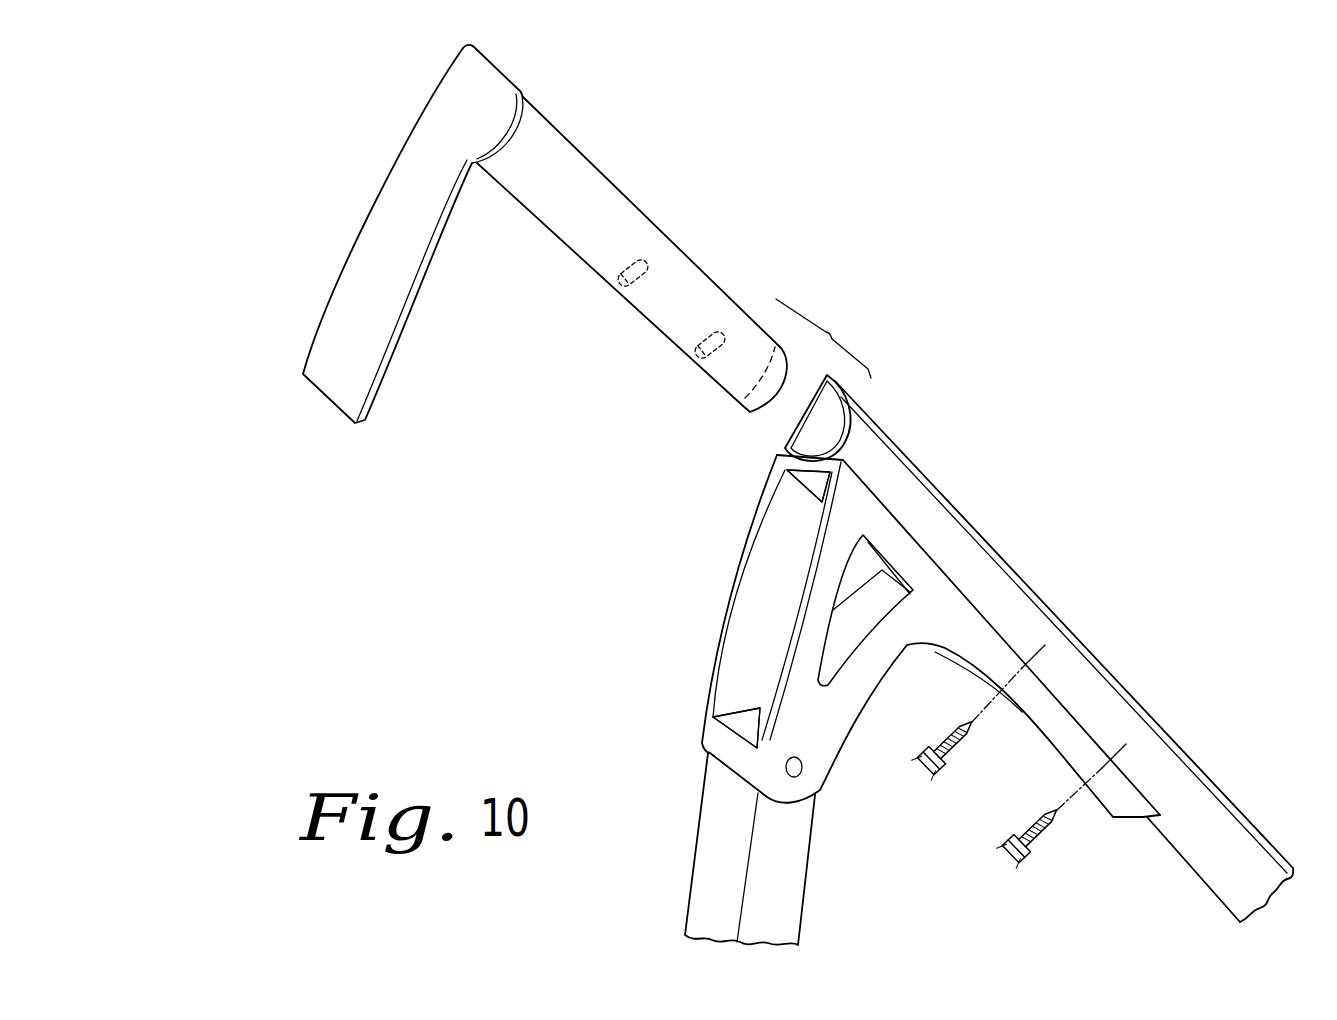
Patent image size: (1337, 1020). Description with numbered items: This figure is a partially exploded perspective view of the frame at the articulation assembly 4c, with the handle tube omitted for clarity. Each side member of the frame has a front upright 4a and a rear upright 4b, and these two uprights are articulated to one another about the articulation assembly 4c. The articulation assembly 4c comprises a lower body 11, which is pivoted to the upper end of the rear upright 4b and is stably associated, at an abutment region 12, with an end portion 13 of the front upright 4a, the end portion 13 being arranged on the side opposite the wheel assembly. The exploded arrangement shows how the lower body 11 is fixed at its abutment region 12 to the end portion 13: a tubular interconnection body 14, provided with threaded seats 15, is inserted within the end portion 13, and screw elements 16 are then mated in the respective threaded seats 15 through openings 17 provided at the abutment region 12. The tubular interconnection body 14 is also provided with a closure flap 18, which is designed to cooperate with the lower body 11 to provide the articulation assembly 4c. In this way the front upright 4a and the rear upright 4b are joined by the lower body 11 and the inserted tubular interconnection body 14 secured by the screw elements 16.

The front upright 4a is at (1157, 775).
The rear upright 4b is at (777, 862).
The articulation assembly 4c is at (795, 705).
The lower body 11 is at (815, 605).
The abutment region 12 is at (803, 478).
The end portion 13 is at (915, 498).
The tubular interconnection body 14 is at (568, 193).
The threaded seats 15 is at (618, 284).
The screw elements 16 is at (957, 750).
The openings 17 is at (1022, 670).
The closure flap 18 is at (363, 289).